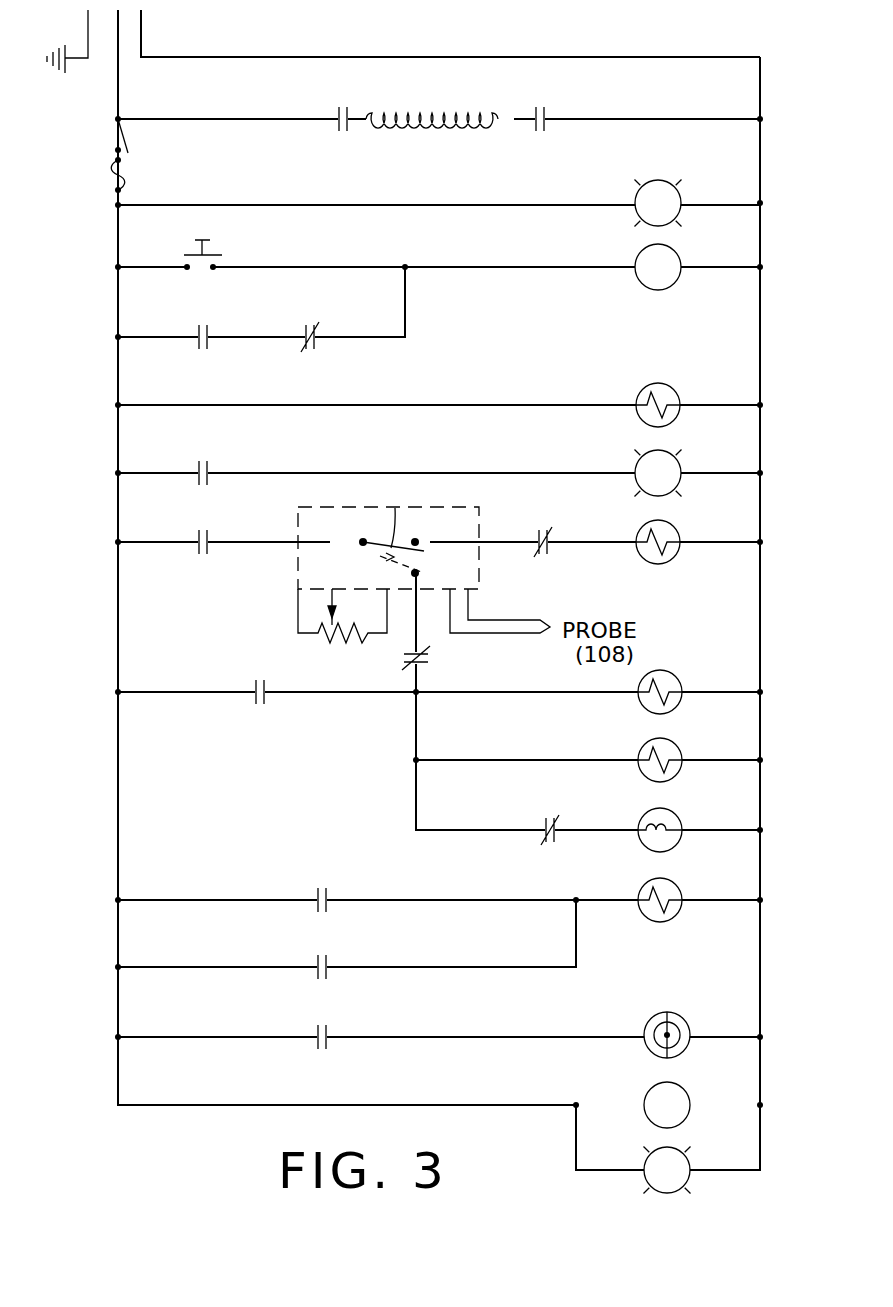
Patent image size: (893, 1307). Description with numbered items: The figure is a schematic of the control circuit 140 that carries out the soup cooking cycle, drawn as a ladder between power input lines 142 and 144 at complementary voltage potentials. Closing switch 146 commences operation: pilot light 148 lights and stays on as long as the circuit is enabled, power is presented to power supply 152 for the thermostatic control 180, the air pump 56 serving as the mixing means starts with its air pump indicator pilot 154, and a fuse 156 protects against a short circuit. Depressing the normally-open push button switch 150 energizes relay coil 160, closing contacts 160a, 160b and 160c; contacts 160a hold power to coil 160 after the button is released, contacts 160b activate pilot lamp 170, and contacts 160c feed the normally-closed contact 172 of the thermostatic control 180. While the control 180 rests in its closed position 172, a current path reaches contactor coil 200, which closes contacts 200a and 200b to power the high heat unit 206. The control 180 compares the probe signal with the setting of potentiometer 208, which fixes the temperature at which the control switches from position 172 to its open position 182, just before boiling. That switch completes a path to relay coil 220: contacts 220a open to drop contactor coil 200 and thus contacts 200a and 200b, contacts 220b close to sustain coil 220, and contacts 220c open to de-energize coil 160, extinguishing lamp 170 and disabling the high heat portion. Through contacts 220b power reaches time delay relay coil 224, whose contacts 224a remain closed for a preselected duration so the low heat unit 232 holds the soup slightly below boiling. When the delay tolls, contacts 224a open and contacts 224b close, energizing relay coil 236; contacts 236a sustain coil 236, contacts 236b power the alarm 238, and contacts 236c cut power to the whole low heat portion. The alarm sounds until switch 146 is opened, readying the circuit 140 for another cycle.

The control circuit 140 is at (100, 308).
The power input line 142 is at (120, 62).
The power input line 144 is at (141, 40).
The switch 146 is at (131, 142).
The pilot light 148 is at (680, 196).
The normally-open switch 150 is at (225, 257).
The power supply 152 is at (675, 388).
The air pump indicator pilot 154 is at (688, 1160).
The fuse 156 is at (124, 180).
The relay coil 160 is at (680, 258).
The contacts 160a is at (206, 348).
The contacts 160b is at (207, 465).
The contacts 160c is at (204, 556).
The pilot lamp 170 is at (683, 463).
The normally-closed contact 172 is at (380, 528).
The thermostatic control 180 is at (330, 508).
The open position 182 is at (378, 567).
The contactor coil 200 is at (679, 532).
The contacts 200a is at (341, 104).
The contacts 200b is at (546, 104).
The high heat unit 206 is at (500, 127).
The potentiometer 208 is at (322, 648).
The relay coil 220 is at (681, 680).
The contacts 220a is at (542, 522).
The contacts 220b is at (258, 706).
The contacts 220c is at (314, 349).
The time delay relay coil 224 is at (681, 748).
The contacts 224a is at (540, 846).
The contacts 224b is at (318, 886).
The low heat unit 232 is at (681, 817).
The relay coil 236 is at (681, 887).
The contacts 236a is at (318, 980).
The contacts 236b is at (318, 1050).
The contacts 236c is at (434, 666).
The alarm 238 is at (672, 1013).
The air pump 56 is at (688, 1090).